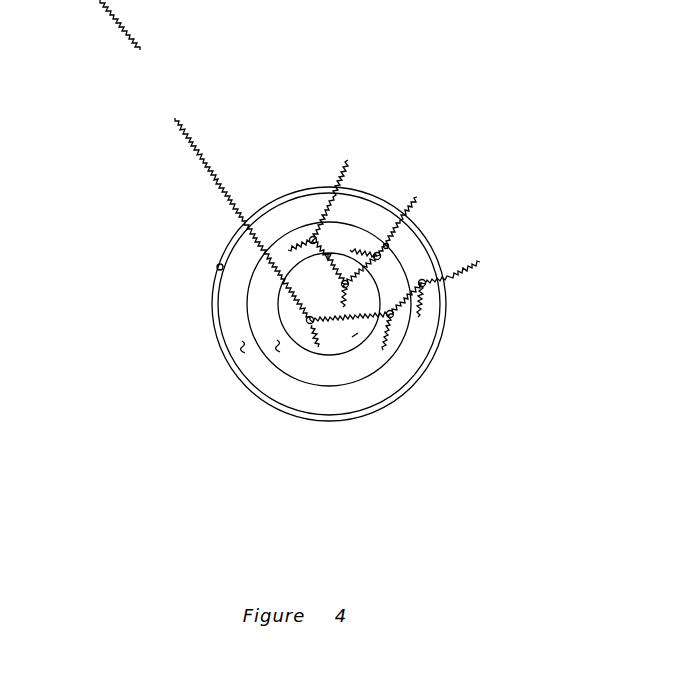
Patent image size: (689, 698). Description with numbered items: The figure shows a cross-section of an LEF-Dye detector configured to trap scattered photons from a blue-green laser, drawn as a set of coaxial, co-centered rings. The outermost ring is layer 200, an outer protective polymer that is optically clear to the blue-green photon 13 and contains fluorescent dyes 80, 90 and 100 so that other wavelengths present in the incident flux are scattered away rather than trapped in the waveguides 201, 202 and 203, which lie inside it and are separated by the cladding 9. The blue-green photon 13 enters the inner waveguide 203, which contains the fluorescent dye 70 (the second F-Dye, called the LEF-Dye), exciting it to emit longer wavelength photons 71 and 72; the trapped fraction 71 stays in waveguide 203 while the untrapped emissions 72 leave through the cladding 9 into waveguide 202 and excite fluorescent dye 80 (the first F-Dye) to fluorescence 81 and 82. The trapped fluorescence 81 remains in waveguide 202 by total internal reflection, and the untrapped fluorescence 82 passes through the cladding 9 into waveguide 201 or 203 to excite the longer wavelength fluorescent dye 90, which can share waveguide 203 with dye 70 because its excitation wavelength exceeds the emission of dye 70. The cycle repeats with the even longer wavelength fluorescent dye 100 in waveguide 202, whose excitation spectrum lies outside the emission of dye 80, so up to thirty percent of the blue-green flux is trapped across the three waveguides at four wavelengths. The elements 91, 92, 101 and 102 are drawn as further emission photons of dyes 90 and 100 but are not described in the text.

The cladding 9 is at (225, 342).
The blue-green photon 13 is at (205, 160).
The fluorescent dye F-Dye #2 70 is at (309, 323).
The trapped F-Dye #2 fluorescence photons 71 is at (333, 322).
The untrapped emissions of dye 72 is at (348, 322).
The fluorescent dye F-Dye #1 80 is at (392, 317).
The trapped F-Dye #1 fluorescence 81 is at (385, 352).
The untrapped fluorescence 82 is at (406, 309).
The longer wavelength fluorescent dye 90 is at (424, 281).
The chain end segment 91 is at (418, 305).
The chain segment 92 is at (480, 263).
The even longer wavelength fluorescent dye 100 is at (387, 244).
The chain segment 101 is at (418, 197).
The chain segment 102 is at (297, 238).
The outer protective polymer layer 200 is at (218, 266).
The waveguide 201 is at (240, 350).
The waveguide 202 is at (276, 349).
The waveguide 203 is at (352, 337).